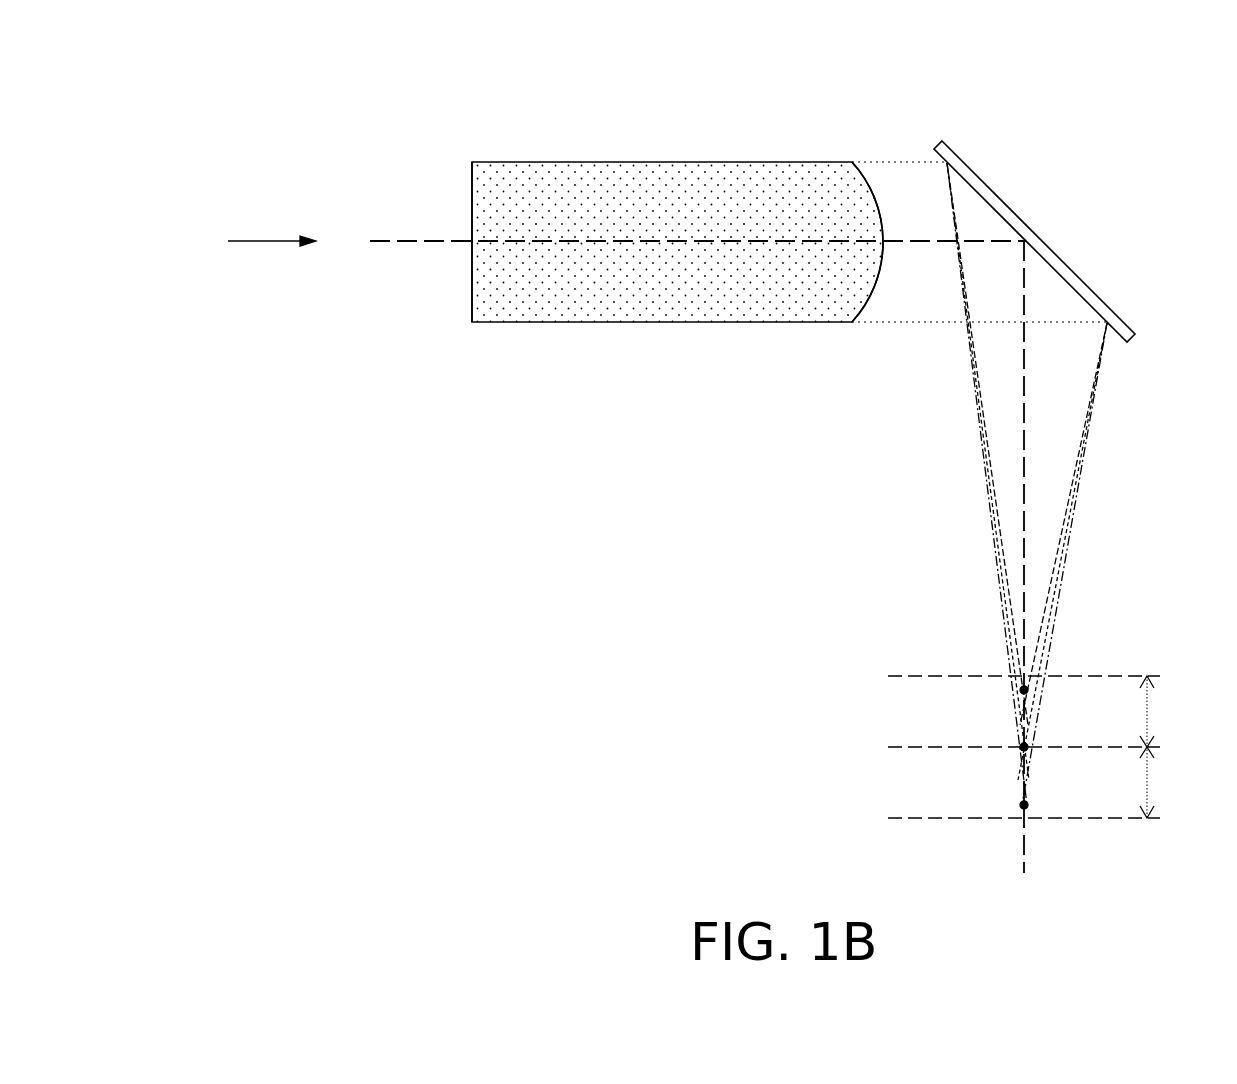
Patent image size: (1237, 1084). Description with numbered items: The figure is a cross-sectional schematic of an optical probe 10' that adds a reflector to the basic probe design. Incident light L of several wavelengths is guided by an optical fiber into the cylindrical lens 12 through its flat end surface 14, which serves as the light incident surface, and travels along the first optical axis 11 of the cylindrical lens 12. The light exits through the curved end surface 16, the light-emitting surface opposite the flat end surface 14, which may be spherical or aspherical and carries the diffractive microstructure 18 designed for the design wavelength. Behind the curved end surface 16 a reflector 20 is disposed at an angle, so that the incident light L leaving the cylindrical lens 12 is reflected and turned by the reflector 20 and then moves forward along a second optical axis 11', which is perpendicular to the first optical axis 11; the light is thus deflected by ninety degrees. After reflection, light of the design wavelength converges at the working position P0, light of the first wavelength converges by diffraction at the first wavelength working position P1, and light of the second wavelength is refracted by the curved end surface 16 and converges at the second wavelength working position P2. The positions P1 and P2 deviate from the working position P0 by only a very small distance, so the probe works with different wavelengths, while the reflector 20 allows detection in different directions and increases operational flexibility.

The optical probe 10' is at (251, 56).
The first optical axis 11 is at (697, 273).
The second optical axis 11' is at (955, 557).
The cylindrical lens 12 is at (672, 211).
The flat end surface 14 is at (470, 205).
The curved end surface 16 is at (886, 211).
The diffractive microstructure 18 is at (873, 190).
The reflector 20 is at (1086, 284).
The incident light L is at (272, 261).
The working position P0 is at (1020, 751).
The first wavelength working position P1 is at (1020, 694).
The second wavelength working position P2 is at (1020, 809).